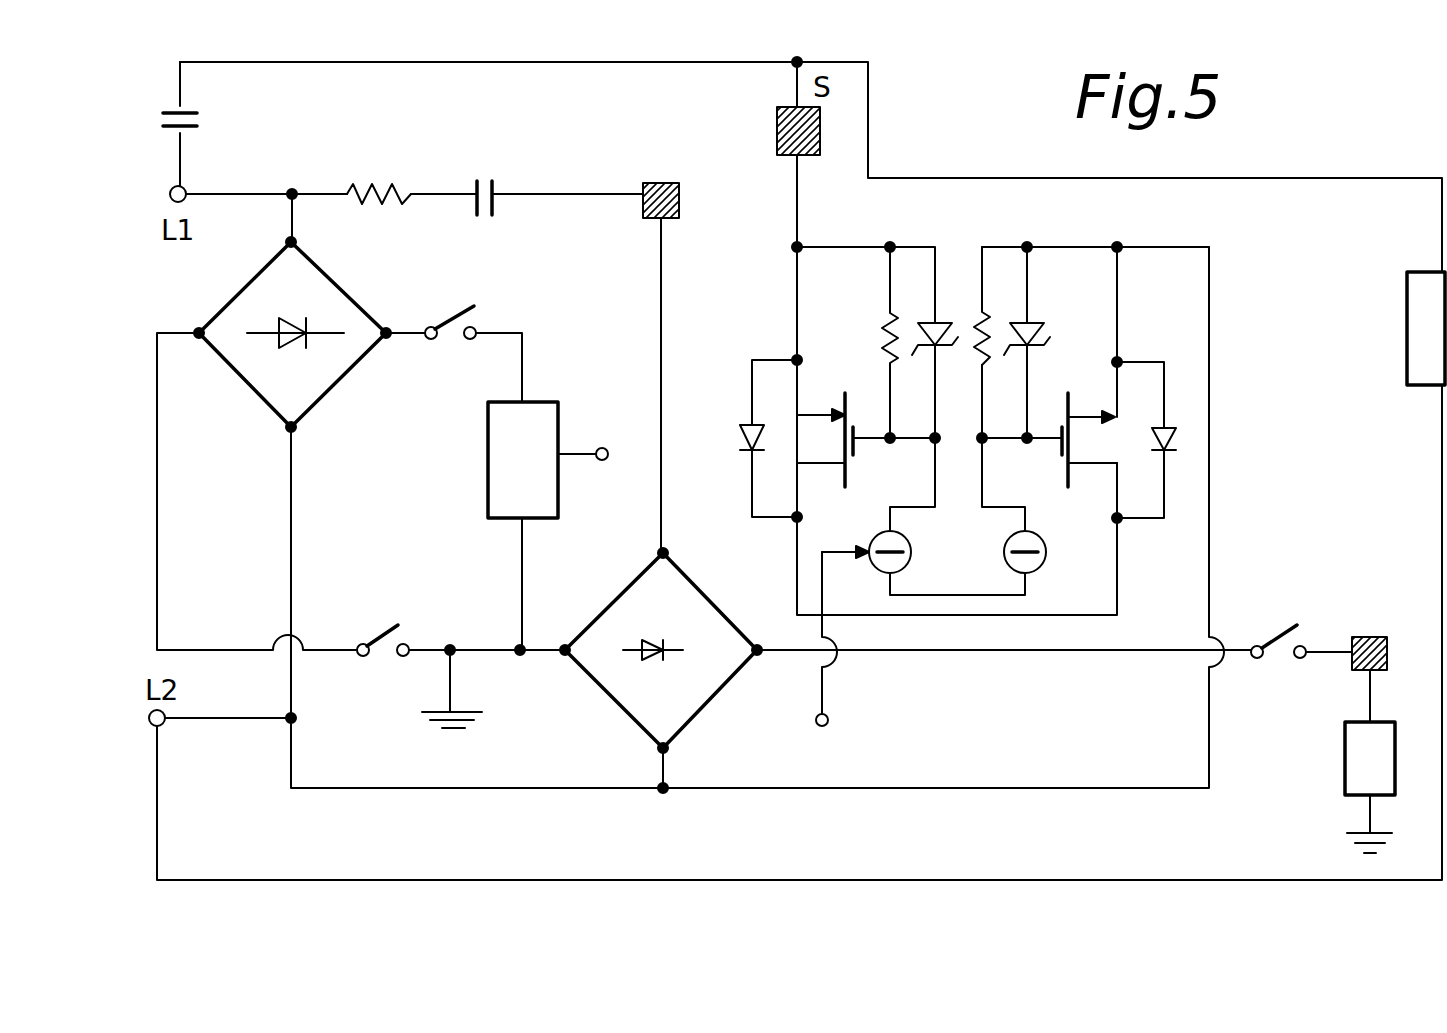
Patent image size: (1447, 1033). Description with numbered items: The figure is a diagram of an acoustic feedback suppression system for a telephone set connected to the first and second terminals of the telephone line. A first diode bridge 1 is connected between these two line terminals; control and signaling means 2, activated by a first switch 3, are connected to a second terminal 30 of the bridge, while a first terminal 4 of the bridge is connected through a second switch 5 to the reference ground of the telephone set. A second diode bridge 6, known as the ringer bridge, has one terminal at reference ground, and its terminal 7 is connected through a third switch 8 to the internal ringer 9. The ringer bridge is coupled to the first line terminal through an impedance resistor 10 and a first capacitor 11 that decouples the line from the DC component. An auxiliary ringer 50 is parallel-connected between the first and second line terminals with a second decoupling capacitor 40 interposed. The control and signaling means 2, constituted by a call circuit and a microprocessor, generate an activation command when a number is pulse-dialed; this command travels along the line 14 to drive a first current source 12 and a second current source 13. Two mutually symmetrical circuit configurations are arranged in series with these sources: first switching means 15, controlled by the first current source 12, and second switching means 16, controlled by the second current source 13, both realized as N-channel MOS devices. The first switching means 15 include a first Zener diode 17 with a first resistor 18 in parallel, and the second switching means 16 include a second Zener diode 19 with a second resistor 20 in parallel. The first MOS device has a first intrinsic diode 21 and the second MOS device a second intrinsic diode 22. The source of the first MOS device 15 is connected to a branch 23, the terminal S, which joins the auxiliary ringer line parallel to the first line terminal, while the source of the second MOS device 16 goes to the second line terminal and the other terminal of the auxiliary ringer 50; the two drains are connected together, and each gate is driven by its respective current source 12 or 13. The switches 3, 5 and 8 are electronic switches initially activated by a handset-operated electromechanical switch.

The first diode bridge 1 is at (335, 297).
The control and signaling means 2 is at (523, 490).
The first switch 3 is at (461, 326).
The first terminal 4 is at (202, 326).
The second switch 5 is at (363, 643).
The second diode bridge 6 is at (615, 672).
The terminal 7 is at (757, 658).
The third switch 8 is at (1300, 643).
The internal ringer 9 is at (1364, 748).
The impedance resistor 10 is at (399, 197).
The first capacitor 11 is at (497, 185).
The first current source 12 is at (903, 558).
The second current source 13 is at (1042, 560).
The line 14 is at (602, 447).
The first switching means 15 is at (830, 408).
The second switching means 16 is at (1085, 408).
The first Zener diode 17 is at (935, 320).
The first resistor 18 is at (888, 317).
The second Zener diode 19 is at (1030, 322).
The second resistor 20 is at (978, 317).
The first intrinsic diode 21 is at (750, 428).
The second intrinsic diode 22 is at (1166, 437).
The branch 23 is at (800, 60).
The second terminal 30 is at (386, 344).
The second decoupling capacitor 40 is at (199, 115).
The auxiliary ringer 50 is at (1407, 338).